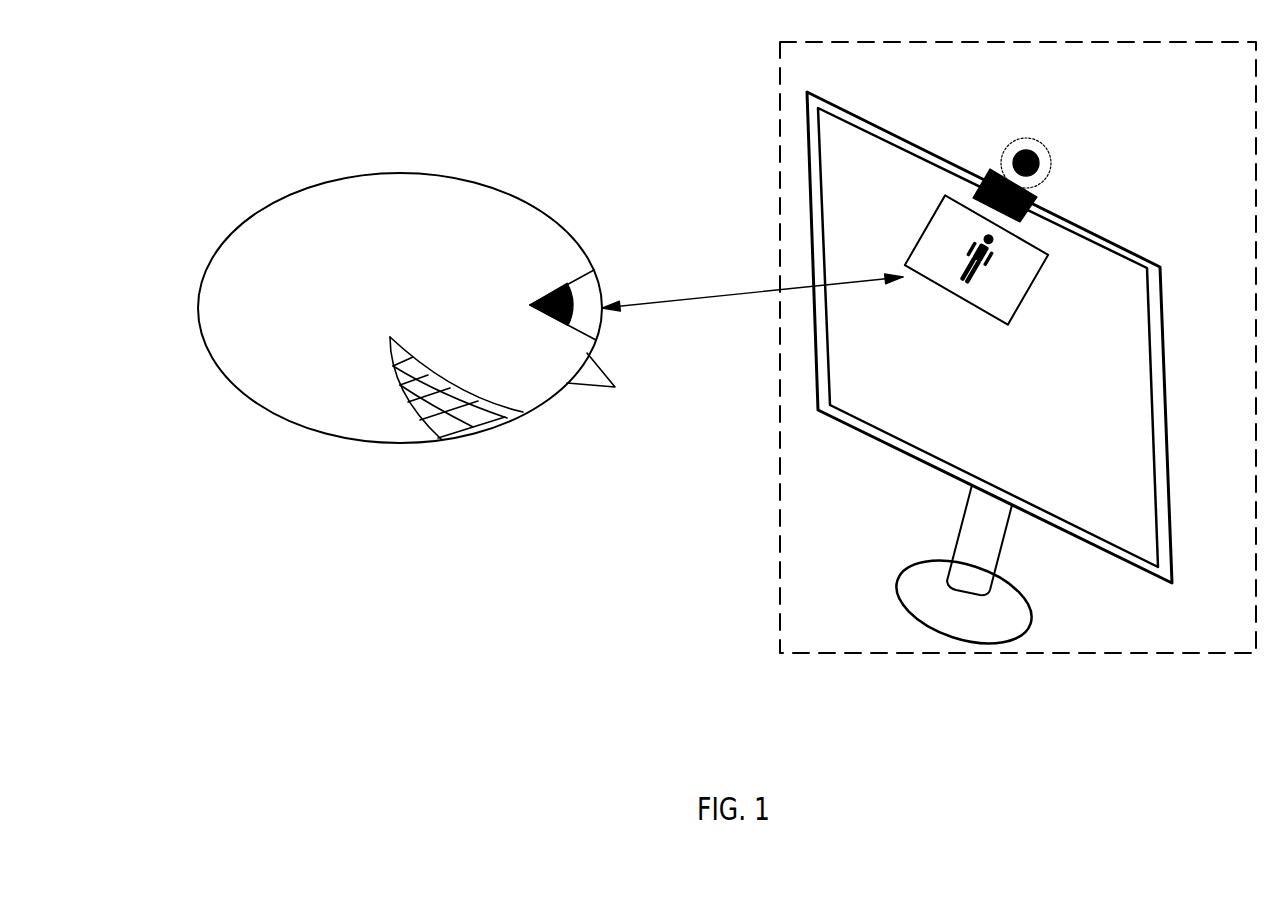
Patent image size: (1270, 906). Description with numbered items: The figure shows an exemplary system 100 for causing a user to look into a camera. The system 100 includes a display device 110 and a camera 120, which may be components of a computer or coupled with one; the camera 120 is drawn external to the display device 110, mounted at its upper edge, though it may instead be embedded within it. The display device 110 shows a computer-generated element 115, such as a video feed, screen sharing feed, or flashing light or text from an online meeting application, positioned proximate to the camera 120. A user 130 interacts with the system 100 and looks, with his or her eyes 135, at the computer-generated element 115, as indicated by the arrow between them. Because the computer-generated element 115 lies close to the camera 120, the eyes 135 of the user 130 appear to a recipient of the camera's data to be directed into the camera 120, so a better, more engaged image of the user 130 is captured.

The system 100 is at (1038, 70).
The display device 110 is at (1174, 496).
The computer-generated element 115 is at (937, 290).
The camera 120 is at (1072, 182).
The user 130 is at (325, 171).
The eyes 135 is at (548, 283).